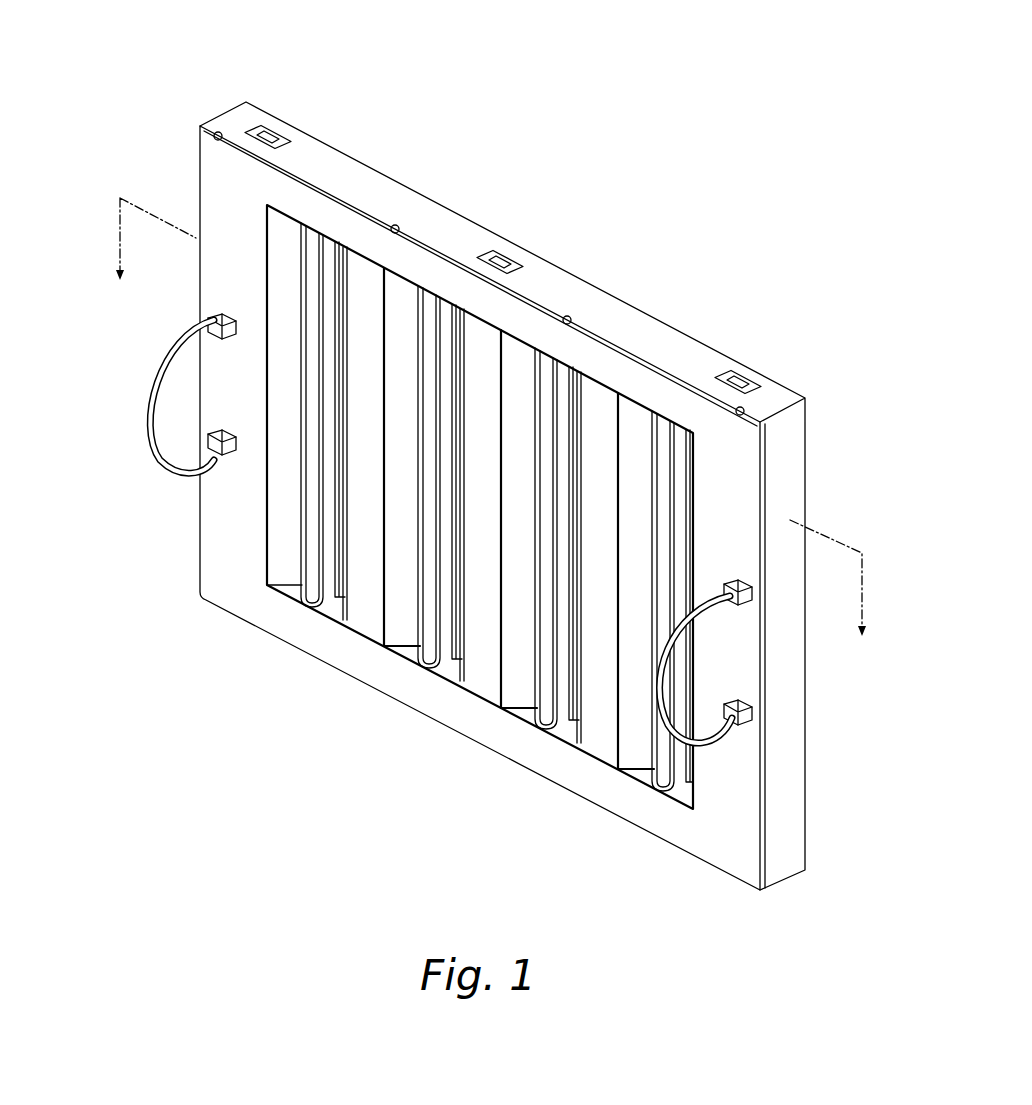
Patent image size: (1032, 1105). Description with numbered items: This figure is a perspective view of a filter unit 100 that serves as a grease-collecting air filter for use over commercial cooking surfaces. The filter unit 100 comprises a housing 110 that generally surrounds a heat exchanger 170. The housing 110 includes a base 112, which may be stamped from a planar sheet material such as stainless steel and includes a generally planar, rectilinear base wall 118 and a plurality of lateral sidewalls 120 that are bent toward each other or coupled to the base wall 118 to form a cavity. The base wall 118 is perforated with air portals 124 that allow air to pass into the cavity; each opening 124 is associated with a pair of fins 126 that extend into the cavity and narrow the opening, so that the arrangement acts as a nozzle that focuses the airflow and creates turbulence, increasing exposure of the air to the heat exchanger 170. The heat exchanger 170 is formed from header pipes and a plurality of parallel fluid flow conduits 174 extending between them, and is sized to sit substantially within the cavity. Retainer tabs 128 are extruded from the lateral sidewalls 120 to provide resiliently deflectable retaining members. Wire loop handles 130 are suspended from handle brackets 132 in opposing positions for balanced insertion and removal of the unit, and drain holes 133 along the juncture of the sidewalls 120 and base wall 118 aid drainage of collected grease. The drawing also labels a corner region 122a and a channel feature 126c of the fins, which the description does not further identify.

The filter unit 100 is at (508, 88).
The housing 110 is at (222, 560).
The base 112 is at (226, 195).
The base wall 118 is at (215, 512).
The lateral sidewalls 120 is at (648, 330).
The corner 122a is at (800, 398).
The air portals 124 is at (265, 593).
The fins 126 is at (283, 294).
The blade channel 126c is at (595, 488).
The retainer tabs 128 is at (272, 122).
The handle 130 is at (173, 470).
The handle brackets 132 is at (200, 416).
The drain holes 133 is at (218, 134).
The heat exchanger 170 is at (312, 243).
The fluid flow conduits 174 is at (543, 355).